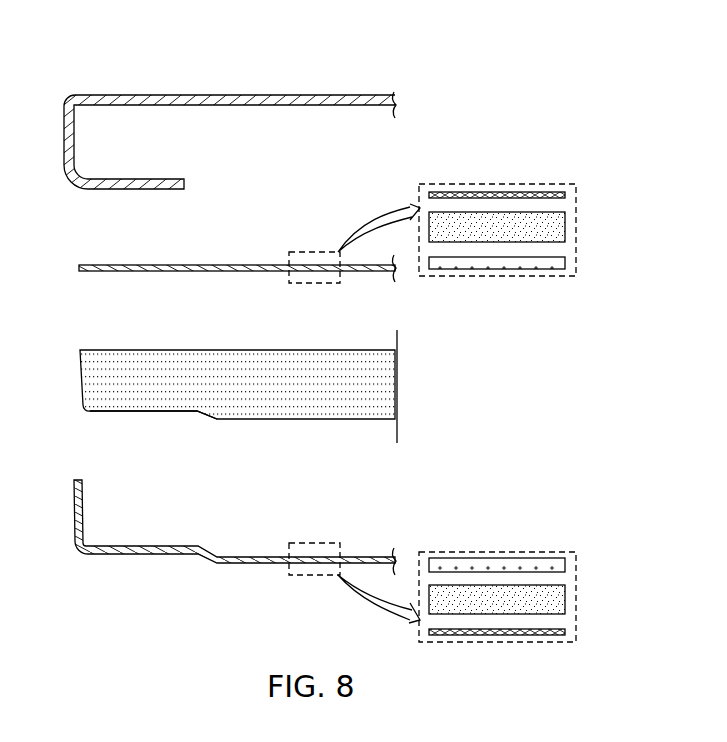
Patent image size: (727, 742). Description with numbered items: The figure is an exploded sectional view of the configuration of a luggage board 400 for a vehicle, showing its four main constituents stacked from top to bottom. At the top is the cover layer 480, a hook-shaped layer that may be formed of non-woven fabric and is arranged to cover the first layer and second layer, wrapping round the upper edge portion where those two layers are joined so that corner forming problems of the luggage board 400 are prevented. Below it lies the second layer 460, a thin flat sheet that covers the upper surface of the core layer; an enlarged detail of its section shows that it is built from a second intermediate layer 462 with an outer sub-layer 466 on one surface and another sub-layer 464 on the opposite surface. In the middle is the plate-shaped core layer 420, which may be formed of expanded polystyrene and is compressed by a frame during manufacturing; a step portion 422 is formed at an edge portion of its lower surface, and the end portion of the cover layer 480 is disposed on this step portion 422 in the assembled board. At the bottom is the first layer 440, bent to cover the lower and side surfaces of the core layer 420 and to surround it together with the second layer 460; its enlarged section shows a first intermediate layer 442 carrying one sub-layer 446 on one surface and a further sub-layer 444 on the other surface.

The luggage board 400 is at (74, 39).
The cover layer 480 is at (344, 100).
The second layer 460 is at (244, 265).
The 2-2 layer 466 is at (557, 196).
The second intermediate layer 462 is at (557, 228).
The 2-1 layer 464 is at (557, 264).
The core layer 420 is at (375, 383).
The step portion 422 is at (140, 415).
The first layer 440 is at (262, 557).
The 1-2 layer 446 is at (557, 565).
The first intermediate layer 442 is at (557, 598).
The 1-1 layer 444 is at (557, 633).